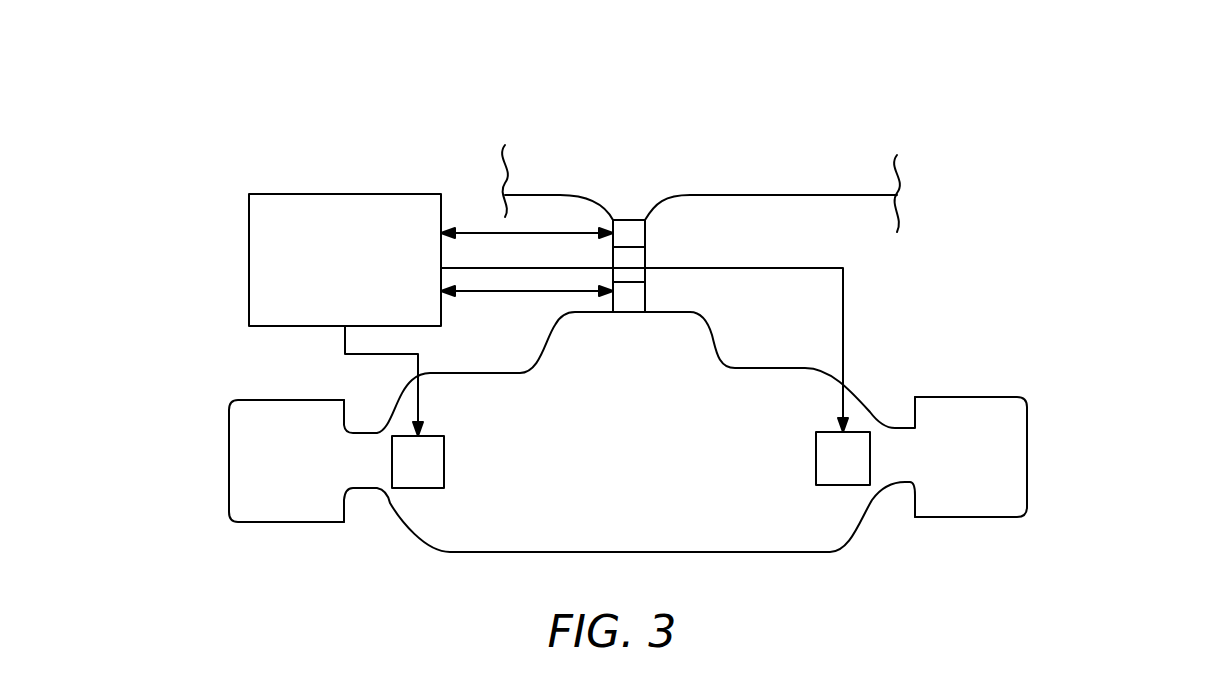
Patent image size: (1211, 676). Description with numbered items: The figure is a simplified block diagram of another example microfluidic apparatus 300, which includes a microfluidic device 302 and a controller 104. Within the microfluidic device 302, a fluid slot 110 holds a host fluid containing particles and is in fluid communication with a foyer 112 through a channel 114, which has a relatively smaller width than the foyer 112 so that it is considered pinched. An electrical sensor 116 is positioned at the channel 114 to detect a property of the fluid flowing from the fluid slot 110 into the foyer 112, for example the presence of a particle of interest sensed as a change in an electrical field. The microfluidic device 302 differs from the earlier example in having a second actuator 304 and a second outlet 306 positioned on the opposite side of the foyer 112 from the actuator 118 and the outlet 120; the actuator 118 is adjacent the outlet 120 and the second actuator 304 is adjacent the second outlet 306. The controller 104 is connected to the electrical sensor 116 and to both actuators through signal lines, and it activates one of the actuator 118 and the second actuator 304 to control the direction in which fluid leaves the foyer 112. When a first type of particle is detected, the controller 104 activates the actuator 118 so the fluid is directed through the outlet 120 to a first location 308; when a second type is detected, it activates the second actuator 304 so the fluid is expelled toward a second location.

The microfluidic apparatus 300 is at (532, 63).
The microfluidic device 302 is at (835, 572).
The controller 104 is at (326, 284).
The fluid slot 110 is at (819, 139).
The electrical sensor 116 is at (606, 182).
The channel 114 is at (645, 247).
The foyer 112 is at (610, 461).
The outlet 120 is at (346, 459).
The second actuator 304 is at (909, 449).
The second outlet 306 is at (257, 522).
The first location 308 is at (932, 517).
The actuator 118 is at (412, 488).